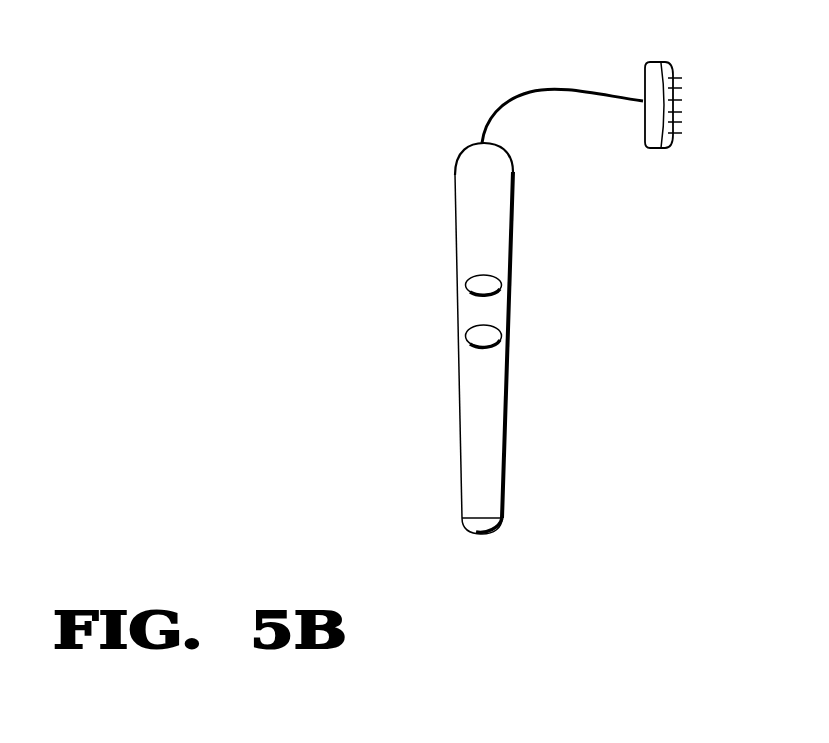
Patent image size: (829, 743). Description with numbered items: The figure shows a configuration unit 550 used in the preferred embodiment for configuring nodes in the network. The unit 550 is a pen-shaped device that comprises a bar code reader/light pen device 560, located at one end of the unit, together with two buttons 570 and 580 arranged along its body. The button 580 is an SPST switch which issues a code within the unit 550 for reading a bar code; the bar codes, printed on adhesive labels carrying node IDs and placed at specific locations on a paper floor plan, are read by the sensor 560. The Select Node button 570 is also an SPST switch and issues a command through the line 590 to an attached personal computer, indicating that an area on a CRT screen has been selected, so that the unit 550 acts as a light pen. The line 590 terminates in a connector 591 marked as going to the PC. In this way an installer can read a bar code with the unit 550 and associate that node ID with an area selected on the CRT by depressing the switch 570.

The configuration unit 550 is at (495, 194).
The bar code reader/light pen device 560 is at (497, 535).
The Select Node button 570 is at (498, 338).
The read bar code button 580 is at (490, 283).
The line 590 is at (583, 87).
The connector to PC 591 is at (677, 73).